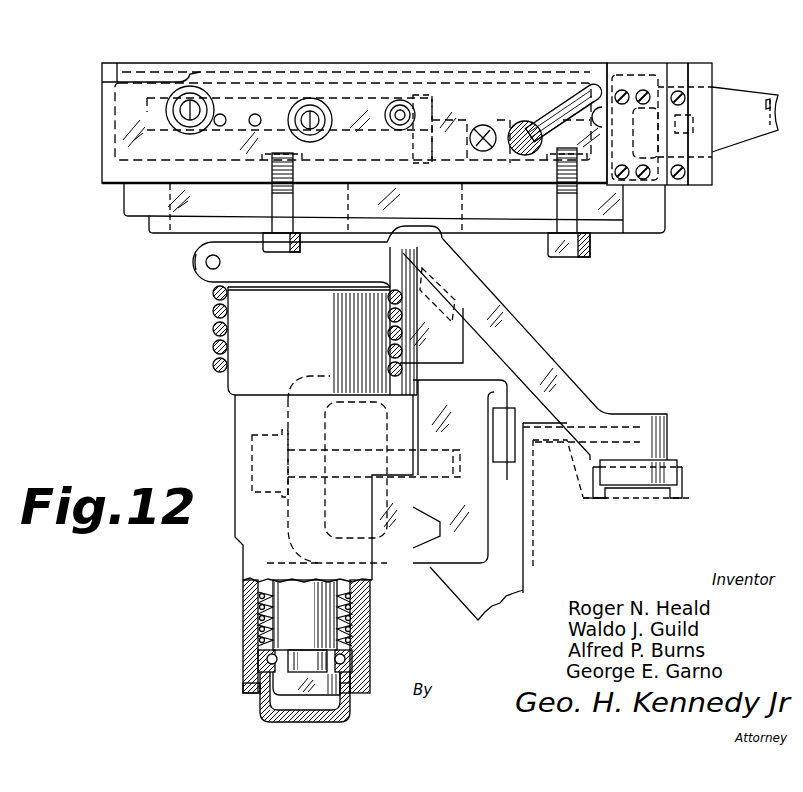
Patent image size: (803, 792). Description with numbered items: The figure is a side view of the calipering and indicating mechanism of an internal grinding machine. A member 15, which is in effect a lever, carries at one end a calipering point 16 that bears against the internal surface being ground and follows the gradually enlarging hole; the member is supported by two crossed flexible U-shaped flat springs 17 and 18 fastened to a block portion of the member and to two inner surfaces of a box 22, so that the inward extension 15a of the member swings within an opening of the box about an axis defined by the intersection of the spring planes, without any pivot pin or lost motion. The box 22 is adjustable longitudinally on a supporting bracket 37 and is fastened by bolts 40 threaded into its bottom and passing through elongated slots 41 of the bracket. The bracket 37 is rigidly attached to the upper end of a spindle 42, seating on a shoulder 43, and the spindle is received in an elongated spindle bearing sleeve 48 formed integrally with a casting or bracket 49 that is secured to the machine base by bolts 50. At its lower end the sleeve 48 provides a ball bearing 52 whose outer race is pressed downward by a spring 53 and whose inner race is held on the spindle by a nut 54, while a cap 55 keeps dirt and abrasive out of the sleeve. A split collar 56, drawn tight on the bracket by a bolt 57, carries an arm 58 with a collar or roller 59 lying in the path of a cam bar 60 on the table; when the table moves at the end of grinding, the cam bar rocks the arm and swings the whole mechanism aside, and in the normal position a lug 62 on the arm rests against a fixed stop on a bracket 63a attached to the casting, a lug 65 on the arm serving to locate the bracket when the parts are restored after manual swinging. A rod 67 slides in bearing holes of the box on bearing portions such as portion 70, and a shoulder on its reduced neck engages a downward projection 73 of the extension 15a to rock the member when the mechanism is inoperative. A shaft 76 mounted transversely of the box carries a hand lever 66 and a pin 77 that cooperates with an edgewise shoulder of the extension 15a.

The member 15 is at (745, 134).
The inward extension 15a is at (452, 110).
The calipering point 16 is at (767, 107).
The flexible U-shaped flat spring 17 is at (632, 88).
The flexible U-shaped flat spring 18 is at (671, 76).
The box 22 is at (114, 169).
The supporting bracket 37 is at (126, 200).
The bolt 40 is at (275, 248).
The elongated slot 41 is at (150, 231).
The spindle 42 is at (292, 603).
The shoulder 43 is at (575, 258).
The spindle bearing sleeve 48 is at (246, 412).
The casting or bracket 49 is at (295, 525).
The bolt 50 is at (263, 458).
The ball bearing 52 is at (258, 657).
The spring 53 is at (258, 620).
The nut 54 is at (260, 690).
The cap 55 is at (297, 715).
The split collar 56 is at (215, 276).
The bolt 57 is at (206, 263).
The arm 58 is at (532, 358).
The collar (roller) 59 is at (652, 468).
The cam bar 60 is at (673, 489).
The lug 62 is at (454, 298).
The bracket 63a is at (510, 492).
The lug 65 is at (435, 244).
The hand lever 66 is at (594, 88).
The rod 67 is at (215, 348).
The bearing portion 70 is at (486, 128).
The downward projection 73 is at (512, 128).
The shaft 76 is at (545, 6).
The pin 77 is at (524, 122).